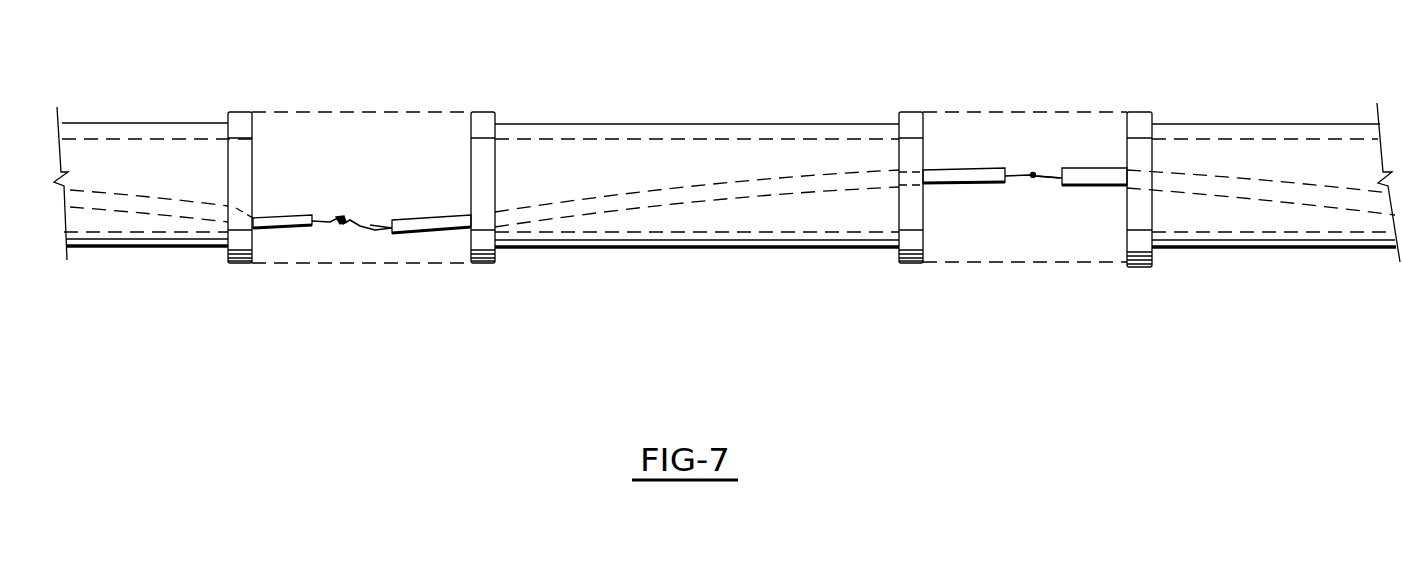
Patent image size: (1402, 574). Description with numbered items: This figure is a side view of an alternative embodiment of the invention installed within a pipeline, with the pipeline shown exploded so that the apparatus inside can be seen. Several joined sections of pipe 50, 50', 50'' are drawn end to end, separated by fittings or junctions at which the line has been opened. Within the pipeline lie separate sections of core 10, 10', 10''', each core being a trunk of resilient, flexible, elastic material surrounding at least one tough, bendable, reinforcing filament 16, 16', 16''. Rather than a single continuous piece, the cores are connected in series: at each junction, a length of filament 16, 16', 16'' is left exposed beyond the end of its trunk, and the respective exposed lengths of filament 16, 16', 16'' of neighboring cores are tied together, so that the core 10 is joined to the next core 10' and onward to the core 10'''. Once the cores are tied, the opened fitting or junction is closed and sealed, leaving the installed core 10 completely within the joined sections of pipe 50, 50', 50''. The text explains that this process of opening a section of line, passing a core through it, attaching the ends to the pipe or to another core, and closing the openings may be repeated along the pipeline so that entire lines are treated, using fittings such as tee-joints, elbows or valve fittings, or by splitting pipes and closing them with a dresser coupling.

The pipe 50 is at (157, 133).
The pipe 50' is at (697, 133).
The pipe 50'' is at (1261, 137).
The core apparatus 10 is at (267, 285).
The core apparatus 10' is at (439, 300).
The cable segment 10''' is at (1106, 100).
The reinforcing filament 16 is at (352, 302).
The reinforcing filament 16' is at (715, 124).
The reinforcing filament 16'' is at (1036, 270).